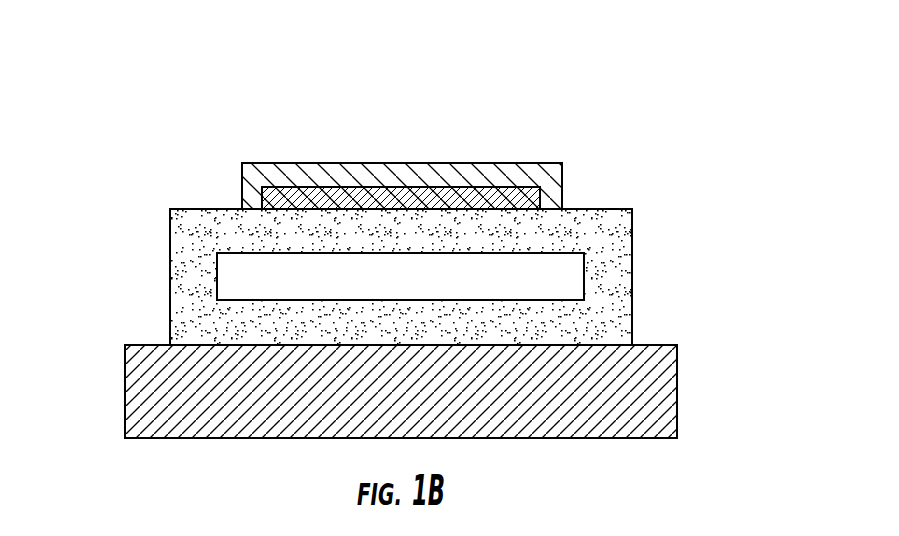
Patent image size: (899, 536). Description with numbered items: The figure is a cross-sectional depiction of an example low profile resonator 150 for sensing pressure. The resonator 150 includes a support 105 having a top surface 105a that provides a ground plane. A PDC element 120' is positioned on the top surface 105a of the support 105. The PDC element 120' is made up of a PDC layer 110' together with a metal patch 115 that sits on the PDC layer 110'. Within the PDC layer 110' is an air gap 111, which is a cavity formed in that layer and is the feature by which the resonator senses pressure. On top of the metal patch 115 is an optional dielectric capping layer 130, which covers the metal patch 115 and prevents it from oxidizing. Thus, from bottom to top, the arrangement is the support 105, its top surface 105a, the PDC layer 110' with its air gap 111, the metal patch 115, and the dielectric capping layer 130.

The support 105 is at (125, 395).
The top surface 105a is at (125, 345).
The PDC layer 110' is at (372, 247).
The air gap 111 is at (242, 277).
The metal patch 115 is at (415, 187).
The PDC element 120' is at (448, 211).
The dielectric capping layer 130 is at (284, 163).
The low profile resonator 150 is at (426, 250).